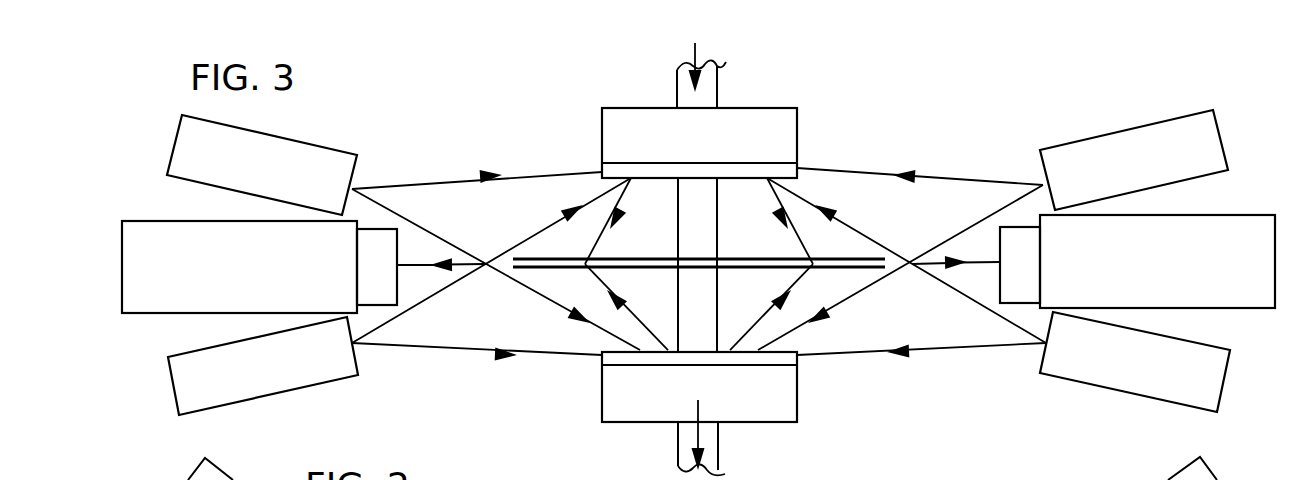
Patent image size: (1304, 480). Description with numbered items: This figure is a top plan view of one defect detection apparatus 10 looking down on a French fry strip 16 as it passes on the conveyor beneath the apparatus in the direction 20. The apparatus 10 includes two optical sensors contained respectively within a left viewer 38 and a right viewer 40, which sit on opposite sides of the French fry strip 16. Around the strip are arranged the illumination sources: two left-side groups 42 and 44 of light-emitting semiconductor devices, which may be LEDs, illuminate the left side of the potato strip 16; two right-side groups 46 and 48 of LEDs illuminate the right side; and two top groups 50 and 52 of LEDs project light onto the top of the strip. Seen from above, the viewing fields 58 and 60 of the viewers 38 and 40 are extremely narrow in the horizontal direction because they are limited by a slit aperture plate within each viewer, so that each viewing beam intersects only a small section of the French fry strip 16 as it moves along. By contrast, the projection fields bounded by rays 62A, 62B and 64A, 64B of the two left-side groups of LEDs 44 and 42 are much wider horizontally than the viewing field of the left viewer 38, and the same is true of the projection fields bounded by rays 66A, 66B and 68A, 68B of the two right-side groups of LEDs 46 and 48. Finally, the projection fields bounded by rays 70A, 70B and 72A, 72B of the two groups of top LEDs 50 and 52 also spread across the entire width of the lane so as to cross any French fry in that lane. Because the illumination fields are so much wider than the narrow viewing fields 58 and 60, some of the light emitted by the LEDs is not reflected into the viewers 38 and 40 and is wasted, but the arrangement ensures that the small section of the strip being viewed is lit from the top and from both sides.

The defect detection apparatus 10 is at (580, 98).
The French fry strip 16 is at (687, 310).
The direction of conveyor travel 20 is at (700, 428).
The left viewer 38 is at (177, 222).
The right viewer 40 is at (1187, 215).
The left-side group of LEDs 42 is at (323, 146).
The left-side group of LEDs 44 is at (238, 407).
The right-side group of LEDs 46 is at (1097, 138).
The right-side group of LEDs 48 is at (1095, 388).
The top group of LEDs 50 is at (723, 103).
The top group of LEDs 52 is at (668, 422).
The viewing field of left viewer 58 is at (427, 262).
The viewing field of right viewer 60 is at (975, 262).
The projection field ray 62A is at (470, 355).
The projection field ray 62B is at (418, 310).
The projection field ray 64A is at (447, 243).
The projection field ray 64B is at (420, 184).
The projection field ray 66A is at (993, 178).
The projection field ray 66B is at (965, 232).
The projection field ray 68A is at (932, 350).
The projection field ray 68B is at (960, 287).
The projection field ray 70A is at (636, 200).
The projection field ray 70B is at (760, 205).
The projection field ray 72A is at (650, 328).
The projection field ray 72B is at (757, 323).